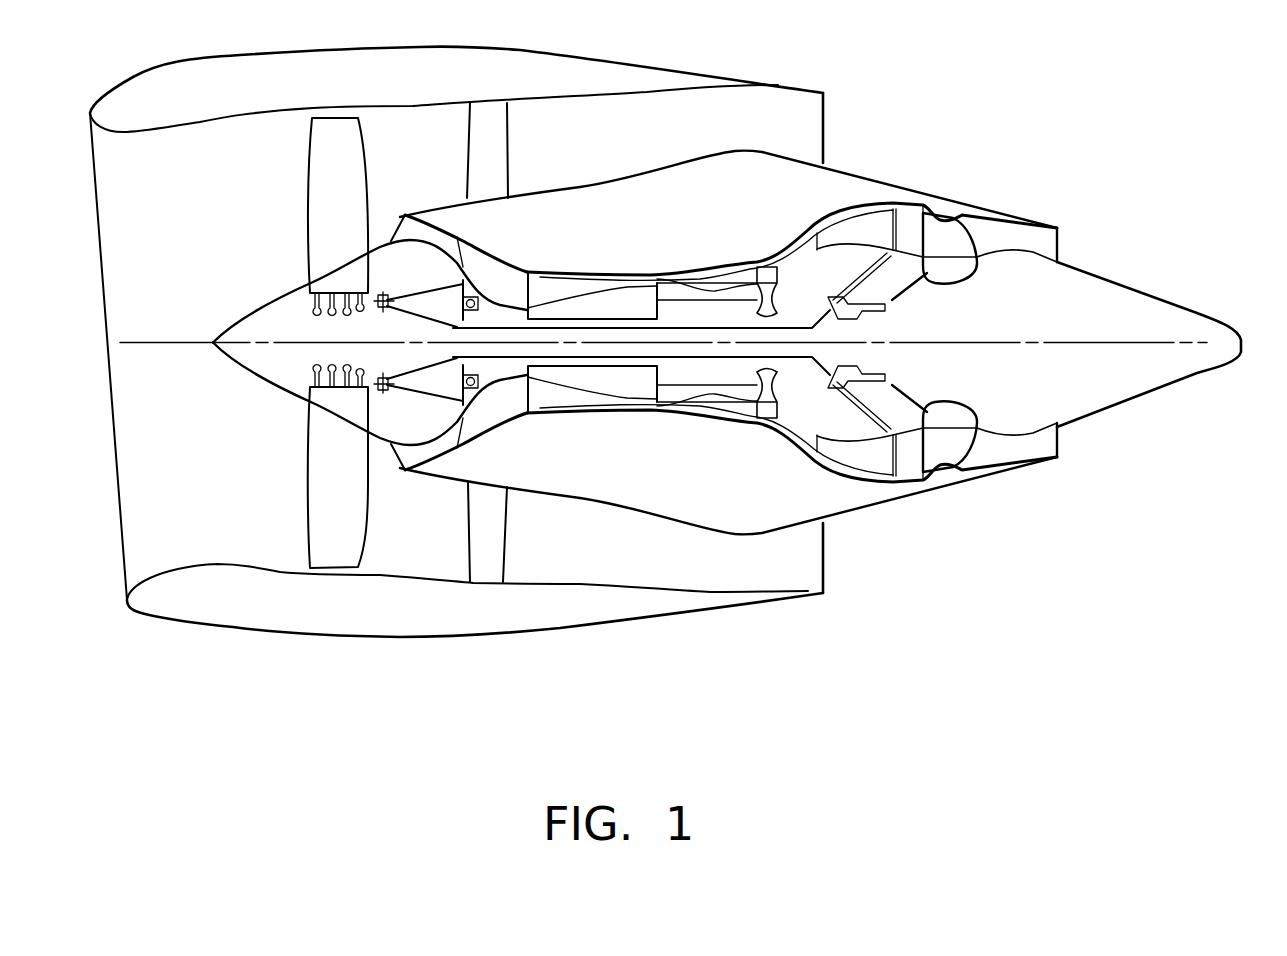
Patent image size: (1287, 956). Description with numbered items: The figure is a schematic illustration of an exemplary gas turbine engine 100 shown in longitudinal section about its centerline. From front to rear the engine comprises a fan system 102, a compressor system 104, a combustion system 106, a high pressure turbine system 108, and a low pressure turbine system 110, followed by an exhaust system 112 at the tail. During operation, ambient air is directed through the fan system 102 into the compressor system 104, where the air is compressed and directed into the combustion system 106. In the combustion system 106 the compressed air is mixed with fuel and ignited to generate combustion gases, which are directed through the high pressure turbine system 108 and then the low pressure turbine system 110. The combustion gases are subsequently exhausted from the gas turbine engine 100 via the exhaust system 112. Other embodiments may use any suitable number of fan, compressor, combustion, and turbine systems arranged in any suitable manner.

The gas turbine engine 100 is at (858, 112).
The fan system 102 is at (287, 205).
The compressor system 104 is at (462, 228).
The combustion system 106 is at (713, 262).
The high pressure turbine system 108 is at (834, 215).
The low pressure turbine system 110 is at (879, 175).
The exhaust system 112 is at (1078, 226).